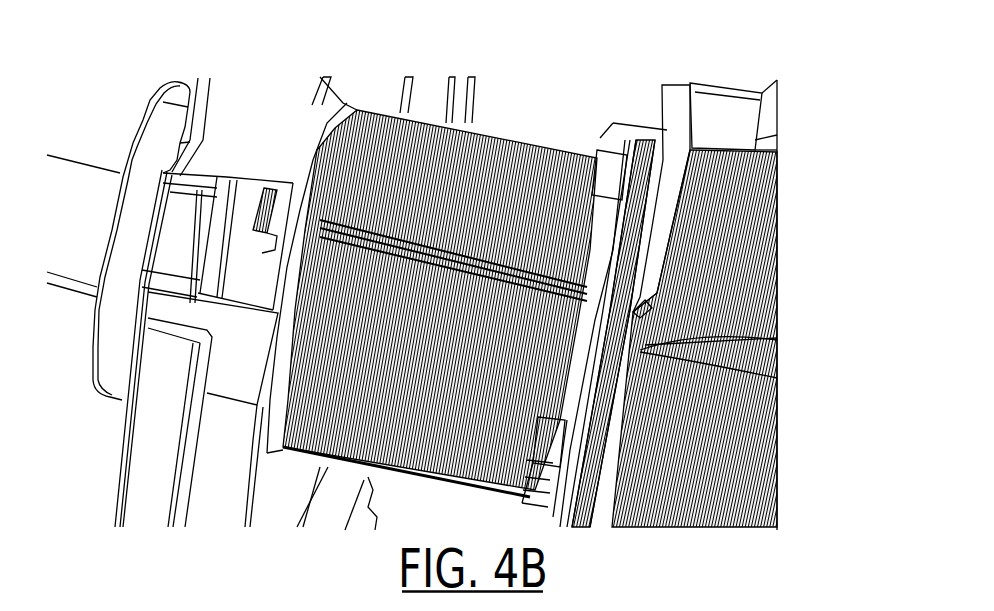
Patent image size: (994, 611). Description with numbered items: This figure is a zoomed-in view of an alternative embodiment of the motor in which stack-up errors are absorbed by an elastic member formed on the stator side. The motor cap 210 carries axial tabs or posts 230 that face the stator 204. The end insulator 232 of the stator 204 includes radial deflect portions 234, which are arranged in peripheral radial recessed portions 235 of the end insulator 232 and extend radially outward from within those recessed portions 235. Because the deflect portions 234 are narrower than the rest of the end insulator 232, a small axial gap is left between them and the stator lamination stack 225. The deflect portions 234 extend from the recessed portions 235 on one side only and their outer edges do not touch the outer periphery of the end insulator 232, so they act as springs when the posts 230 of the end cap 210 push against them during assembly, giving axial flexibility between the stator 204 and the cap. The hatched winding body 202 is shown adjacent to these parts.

The motor cap 210 is at (130, 70).
The posts 230 is at (253, 257).
The first coil assembly 202 is at (520, 122).
The end insulator 232 is at (687, 163).
The stator 204 is at (808, 140).
The stator lamination stack 225 is at (740, 455).
The radial deflect portions 234 is at (638, 350).
The recessed portions 235 is at (638, 298).